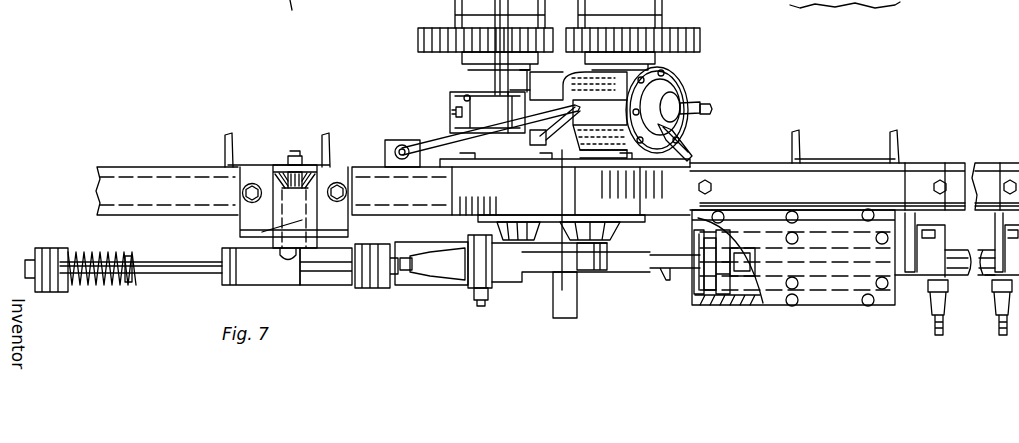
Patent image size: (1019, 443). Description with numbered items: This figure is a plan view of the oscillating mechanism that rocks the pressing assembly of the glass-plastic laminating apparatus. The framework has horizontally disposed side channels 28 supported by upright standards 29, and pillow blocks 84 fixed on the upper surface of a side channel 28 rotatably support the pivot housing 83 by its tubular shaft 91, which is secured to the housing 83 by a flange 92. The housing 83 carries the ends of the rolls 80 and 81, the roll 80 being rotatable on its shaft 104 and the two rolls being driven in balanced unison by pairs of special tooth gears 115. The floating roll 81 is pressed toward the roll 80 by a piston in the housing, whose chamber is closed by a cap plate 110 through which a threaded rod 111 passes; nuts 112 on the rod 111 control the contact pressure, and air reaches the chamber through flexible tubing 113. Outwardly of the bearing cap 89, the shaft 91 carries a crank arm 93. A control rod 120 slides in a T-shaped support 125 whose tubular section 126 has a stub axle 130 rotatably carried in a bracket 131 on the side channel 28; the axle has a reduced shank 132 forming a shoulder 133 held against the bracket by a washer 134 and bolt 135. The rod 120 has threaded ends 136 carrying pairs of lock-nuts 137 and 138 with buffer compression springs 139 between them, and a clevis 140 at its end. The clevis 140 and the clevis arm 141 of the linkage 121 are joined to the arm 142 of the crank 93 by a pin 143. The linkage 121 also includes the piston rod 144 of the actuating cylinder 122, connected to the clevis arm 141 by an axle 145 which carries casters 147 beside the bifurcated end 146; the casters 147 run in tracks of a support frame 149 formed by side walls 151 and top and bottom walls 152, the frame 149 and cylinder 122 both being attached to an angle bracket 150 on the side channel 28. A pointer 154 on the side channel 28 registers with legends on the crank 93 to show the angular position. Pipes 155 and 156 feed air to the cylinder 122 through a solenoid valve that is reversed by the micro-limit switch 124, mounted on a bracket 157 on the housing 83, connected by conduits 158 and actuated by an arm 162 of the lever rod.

The side channel 28 is at (130, 198).
The upright standard 29 is at (327, 145).
The roll 80 is at (452, 13).
The roll 81 is at (670, 12).
The pivot housing 83 is at (650, 78).
The pillow block 84 is at (660, 177).
The bearing cap 89 is at (510, 226).
The tubular shaft 91 is at (600, 238).
The flange 92 is at (543, 83).
The crank arm 93 is at (575, 258).
The shaft 104 is at (494, 78).
The cap plate 110 is at (672, 86).
The threaded rod 111 is at (702, 106).
The nut 112 is at (712, 111).
The flexible tubing 113 is at (682, 142).
The special tooth gear 115 is at (420, 38).
The control rod 120 is at (174, 284).
The linkage 121 is at (646, 285).
The actuating cylinder 122 is at (960, 276).
The micro-limit switch 124 is at (456, 112).
The T-shaped support 125 is at (338, 285).
The tubular section 126 is at (256, 268).
The stub axle 130 is at (276, 174).
The bracket 131 is at (308, 202).
The reduced shank 132 is at (280, 205).
The shoulder 133 is at (297, 243).
The washer 134 is at (288, 175).
The bolt 135 is at (294, 156).
The threaded end 136 is at (102, 262).
The lock-nut 137 is at (60, 292).
The lock-nut 138 is at (372, 290).
The compression spring 139 is at (128, 284).
The clevis 140 is at (432, 285).
The clevis arm 141 is at (525, 275).
The arm 142 is at (492, 262).
The pin 143 is at (478, 305).
The piston rod 144 is at (908, 263).
The axle 145 is at (713, 296).
The bifurcated end 146 is at (738, 280).
The caster 147 is at (697, 268).
The support frame 149 is at (820, 309).
The angle bracket 150 is at (840, 195).
The side wall 151 is at (705, 290).
The top and bottom wall 152 is at (848, 270).
The pointer 154 is at (568, 298).
The pipe 155 is at (938, 328).
The pipe 156 is at (1000, 326).
The bracket 157 is at (527, 104).
The conduit 158 is at (442, 139).
The arm 162 is at (464, 98).